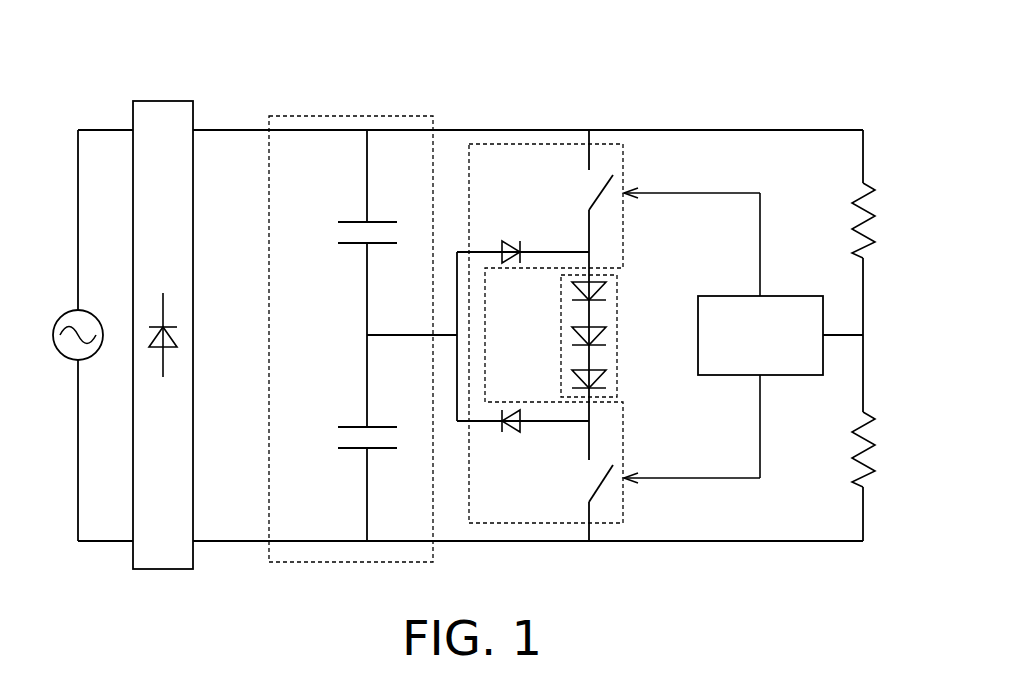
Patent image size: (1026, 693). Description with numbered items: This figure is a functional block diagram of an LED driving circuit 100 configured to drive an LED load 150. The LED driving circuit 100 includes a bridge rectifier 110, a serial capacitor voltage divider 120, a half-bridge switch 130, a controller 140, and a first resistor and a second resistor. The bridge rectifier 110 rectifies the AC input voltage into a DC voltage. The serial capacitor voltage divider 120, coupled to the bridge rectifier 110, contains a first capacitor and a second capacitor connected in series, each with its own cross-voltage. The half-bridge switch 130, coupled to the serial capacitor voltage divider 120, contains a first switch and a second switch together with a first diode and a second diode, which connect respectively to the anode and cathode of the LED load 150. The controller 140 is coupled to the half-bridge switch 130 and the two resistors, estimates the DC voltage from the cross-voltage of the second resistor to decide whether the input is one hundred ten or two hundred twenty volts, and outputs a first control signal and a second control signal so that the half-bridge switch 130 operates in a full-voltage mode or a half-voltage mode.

The LED driving circuit 100 is at (893, 33).
The bridge rectifier 110 is at (163, 101).
The serial capacitor voltage divider 120 is at (352, 116).
The half-bridge switch 130 is at (553, 144).
The controller 140 is at (781, 363).
The LED load 150 is at (617, 327).